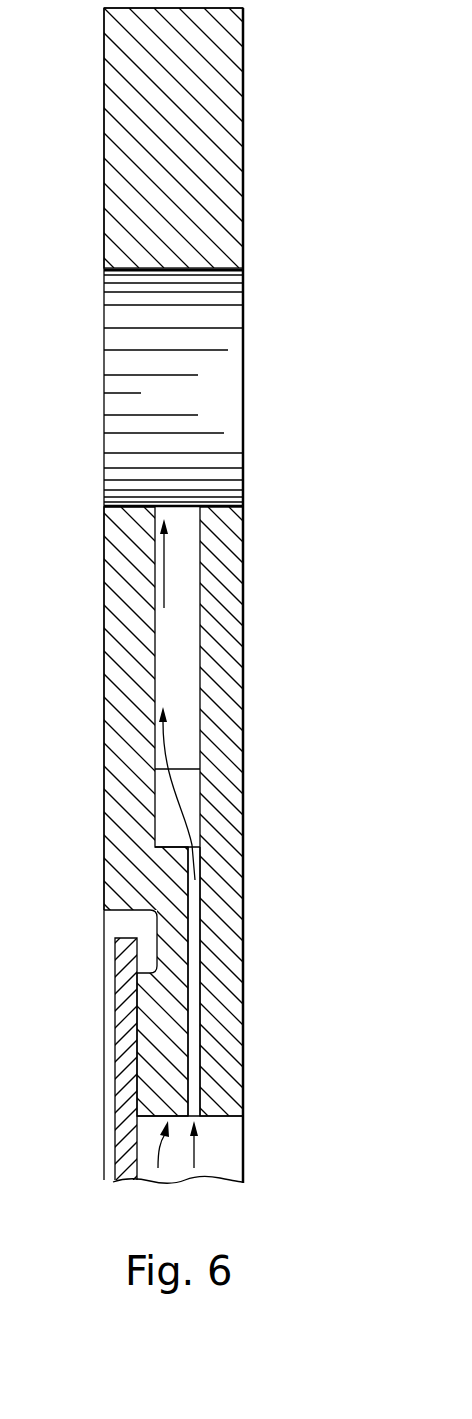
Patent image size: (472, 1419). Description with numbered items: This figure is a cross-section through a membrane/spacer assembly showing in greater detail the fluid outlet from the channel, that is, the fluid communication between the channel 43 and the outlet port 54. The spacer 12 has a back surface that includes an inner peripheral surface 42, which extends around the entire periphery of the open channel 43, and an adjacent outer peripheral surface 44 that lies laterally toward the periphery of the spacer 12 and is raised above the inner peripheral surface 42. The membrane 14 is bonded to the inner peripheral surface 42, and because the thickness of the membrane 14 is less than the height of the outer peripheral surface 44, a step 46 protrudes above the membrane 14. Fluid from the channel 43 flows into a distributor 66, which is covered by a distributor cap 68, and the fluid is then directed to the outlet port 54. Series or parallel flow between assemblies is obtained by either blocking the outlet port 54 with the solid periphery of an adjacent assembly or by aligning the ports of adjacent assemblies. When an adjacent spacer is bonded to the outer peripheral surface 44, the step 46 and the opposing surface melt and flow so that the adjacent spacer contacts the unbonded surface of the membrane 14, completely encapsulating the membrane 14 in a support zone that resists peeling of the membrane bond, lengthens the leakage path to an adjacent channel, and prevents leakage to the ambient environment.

The spacer 12 is at (243, 70).
The outlet port 54 is at (110, 333).
The outer peripheral surface 44 is at (103, 823).
The step 46 is at (102, 908).
The distributor cap 68 is at (242, 870).
The inner peripheral surface 42 is at (135, 1025).
The membrane 14 is at (125, 1182).
The distributor 66 is at (196, 1005).
The channel 43 is at (240, 1168).